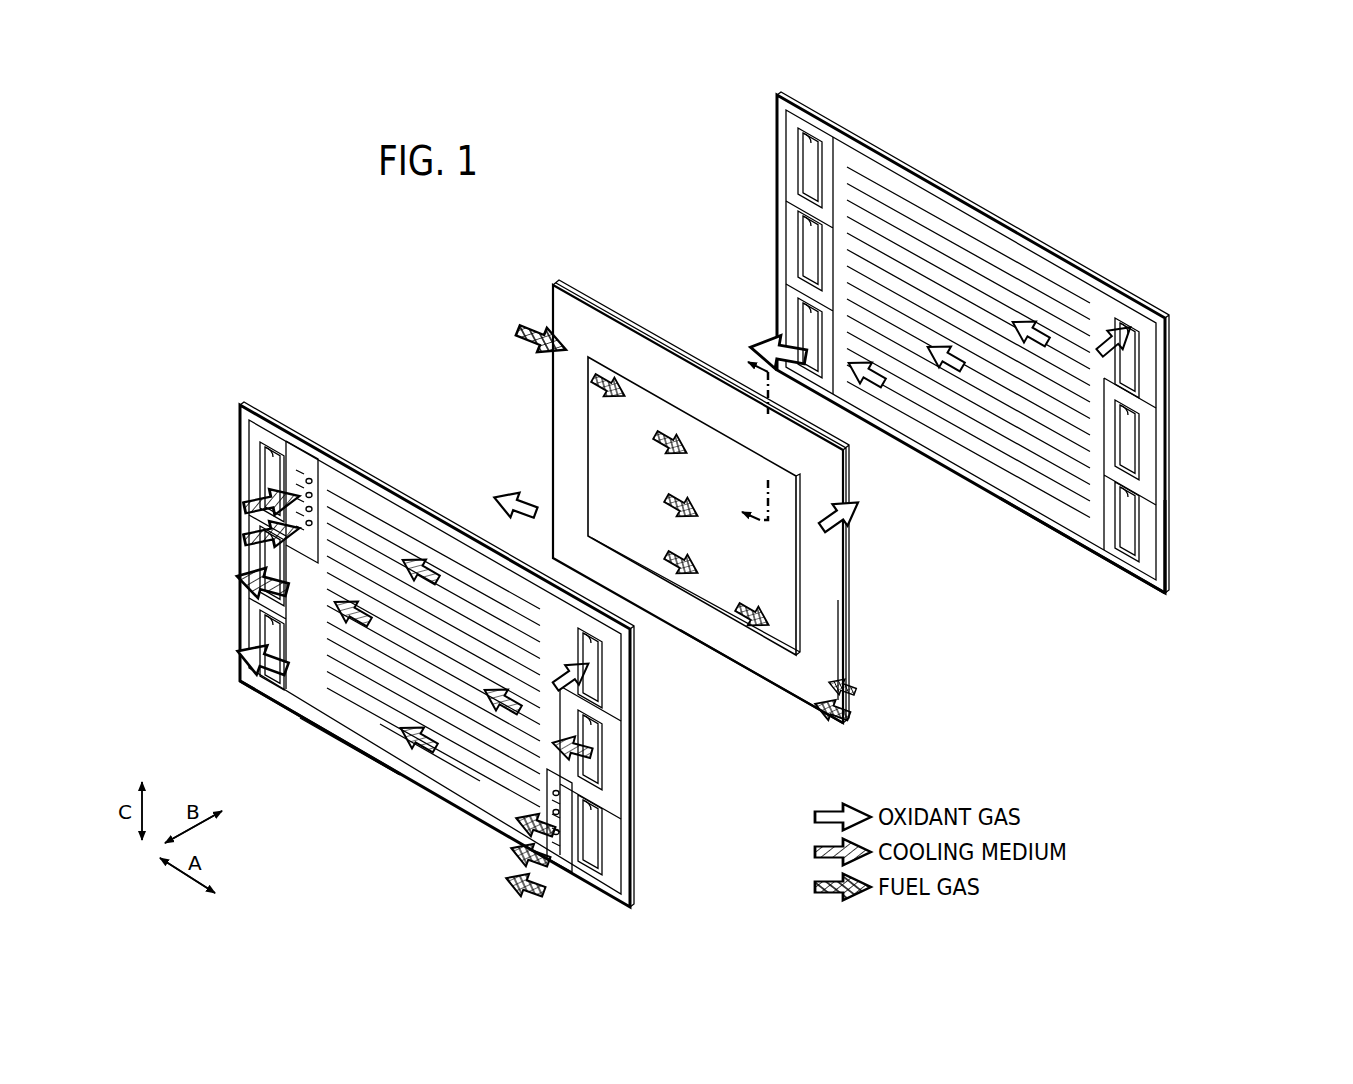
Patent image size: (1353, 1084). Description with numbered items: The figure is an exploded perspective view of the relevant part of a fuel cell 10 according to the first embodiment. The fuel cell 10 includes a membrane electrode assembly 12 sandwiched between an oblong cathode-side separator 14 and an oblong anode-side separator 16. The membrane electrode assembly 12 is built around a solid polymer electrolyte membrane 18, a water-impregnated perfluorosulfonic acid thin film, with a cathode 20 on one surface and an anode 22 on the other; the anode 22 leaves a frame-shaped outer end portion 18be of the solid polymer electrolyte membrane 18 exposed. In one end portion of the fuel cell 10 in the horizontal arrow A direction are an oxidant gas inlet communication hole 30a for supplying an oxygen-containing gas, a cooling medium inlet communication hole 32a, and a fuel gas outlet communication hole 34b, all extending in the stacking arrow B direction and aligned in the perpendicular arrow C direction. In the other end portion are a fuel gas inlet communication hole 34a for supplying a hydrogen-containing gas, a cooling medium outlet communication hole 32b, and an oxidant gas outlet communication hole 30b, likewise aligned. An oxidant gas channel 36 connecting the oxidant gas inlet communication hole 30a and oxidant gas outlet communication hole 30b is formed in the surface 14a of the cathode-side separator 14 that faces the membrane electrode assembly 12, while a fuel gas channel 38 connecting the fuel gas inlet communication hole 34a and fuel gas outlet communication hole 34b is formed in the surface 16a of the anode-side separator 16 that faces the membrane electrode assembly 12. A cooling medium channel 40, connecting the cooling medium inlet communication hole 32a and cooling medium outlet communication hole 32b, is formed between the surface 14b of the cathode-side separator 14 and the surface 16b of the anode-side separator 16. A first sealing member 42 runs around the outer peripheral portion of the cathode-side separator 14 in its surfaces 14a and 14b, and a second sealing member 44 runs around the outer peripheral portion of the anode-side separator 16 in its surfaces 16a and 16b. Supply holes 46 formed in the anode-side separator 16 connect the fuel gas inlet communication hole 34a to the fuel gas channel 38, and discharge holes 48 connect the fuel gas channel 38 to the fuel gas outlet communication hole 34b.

The fuel cell 10 is at (456, 221).
The membrane electrode assembly 12 is at (723, 503).
The cathode-side separator 14 is at (976, 370).
The surface of the cathode-side separator 14a is at (1112, 566).
The surface of the cathode-side separator 14b is at (1152, 597).
The anode-side separator 16 is at (427, 642).
The surface of the anode-side separator 16a is at (290, 718).
The surface of the anode-side separator 16b is at (256, 692).
The solid polymer electrolyte membrane 18 is at (846, 612).
The frame-shaped outer end portion 18be is at (752, 690).
The cathode 20 is at (832, 648).
The anode 22 is at (792, 566).
The oxidant gas inlet communication hole 30a is at (1143, 338).
The oxidant gas outlet communication hole 30b is at (807, 312).
The cooling medium inlet communication hole 32a is at (1150, 424).
The cooling medium outlet communication hole 32b is at (806, 228).
The fuel gas inlet communication hole 34a is at (810, 153).
The fuel gas outlet communication hole 34b is at (1150, 512).
The oxidant gas channel 36 is at (960, 262).
The fuel gas channel 38 is at (385, 728).
The cooling medium channel 40 is at (345, 712).
The first sealing member 42 is at (898, 178).
The second sealing member 44 is at (404, 512).
The supply holes 46 is at (311, 479).
The discharge holes 48 is at (552, 793).